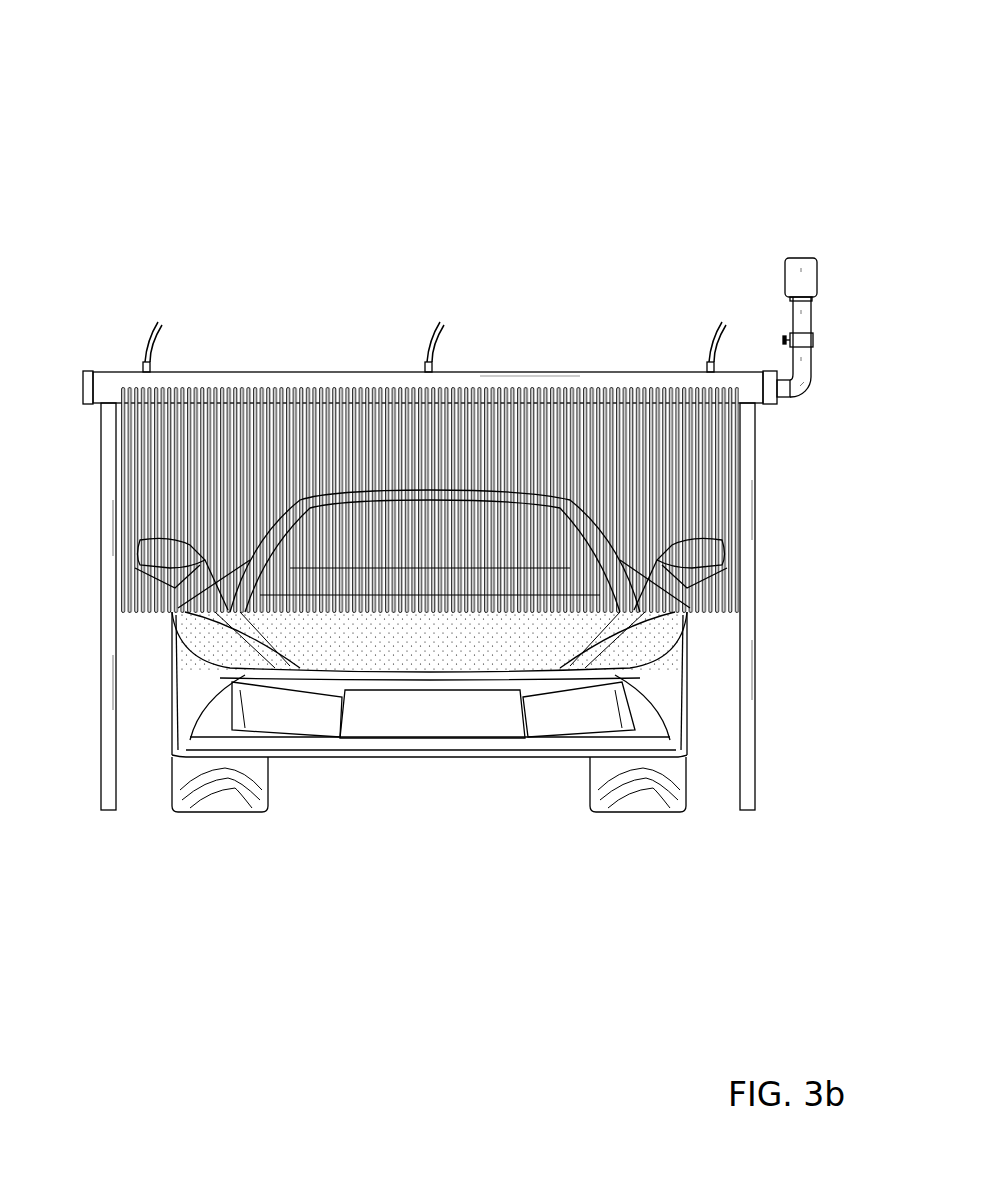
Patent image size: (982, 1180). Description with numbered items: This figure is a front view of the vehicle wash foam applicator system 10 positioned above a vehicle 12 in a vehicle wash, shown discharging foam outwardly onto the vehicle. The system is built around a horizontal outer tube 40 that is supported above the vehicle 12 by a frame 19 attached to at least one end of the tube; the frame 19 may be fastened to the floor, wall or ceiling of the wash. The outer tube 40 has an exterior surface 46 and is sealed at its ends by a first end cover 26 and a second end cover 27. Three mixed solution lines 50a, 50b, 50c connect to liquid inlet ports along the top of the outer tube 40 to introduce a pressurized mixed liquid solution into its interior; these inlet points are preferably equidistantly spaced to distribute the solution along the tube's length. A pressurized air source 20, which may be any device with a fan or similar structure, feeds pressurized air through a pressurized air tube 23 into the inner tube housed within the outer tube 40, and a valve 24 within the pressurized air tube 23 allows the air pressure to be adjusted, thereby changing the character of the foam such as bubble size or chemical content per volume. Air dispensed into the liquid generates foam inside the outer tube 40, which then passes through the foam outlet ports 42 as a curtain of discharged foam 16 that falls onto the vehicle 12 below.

The vehicle wash foam applicator system 10 is at (748, 115).
The vehicle 12 is at (468, 762).
The discharged foam 16 is at (122, 440).
The frame 19 is at (100, 622).
The pressurized air source 20 is at (794, 256).
The pressurized air tube 23 is at (793, 312).
The valve 24 is at (787, 340).
The first end cover 26 is at (777, 403).
The second end cover 27 is at (88, 372).
The outer tube 40 is at (278, 372).
The foam outlet port 42 is at (340, 390).
The exterior surface 46 is at (495, 372).
The mixed solution line 50a is at (158, 322).
The mixed solution line 50b is at (440, 322).
The mixed solution line 50c is at (723, 320).